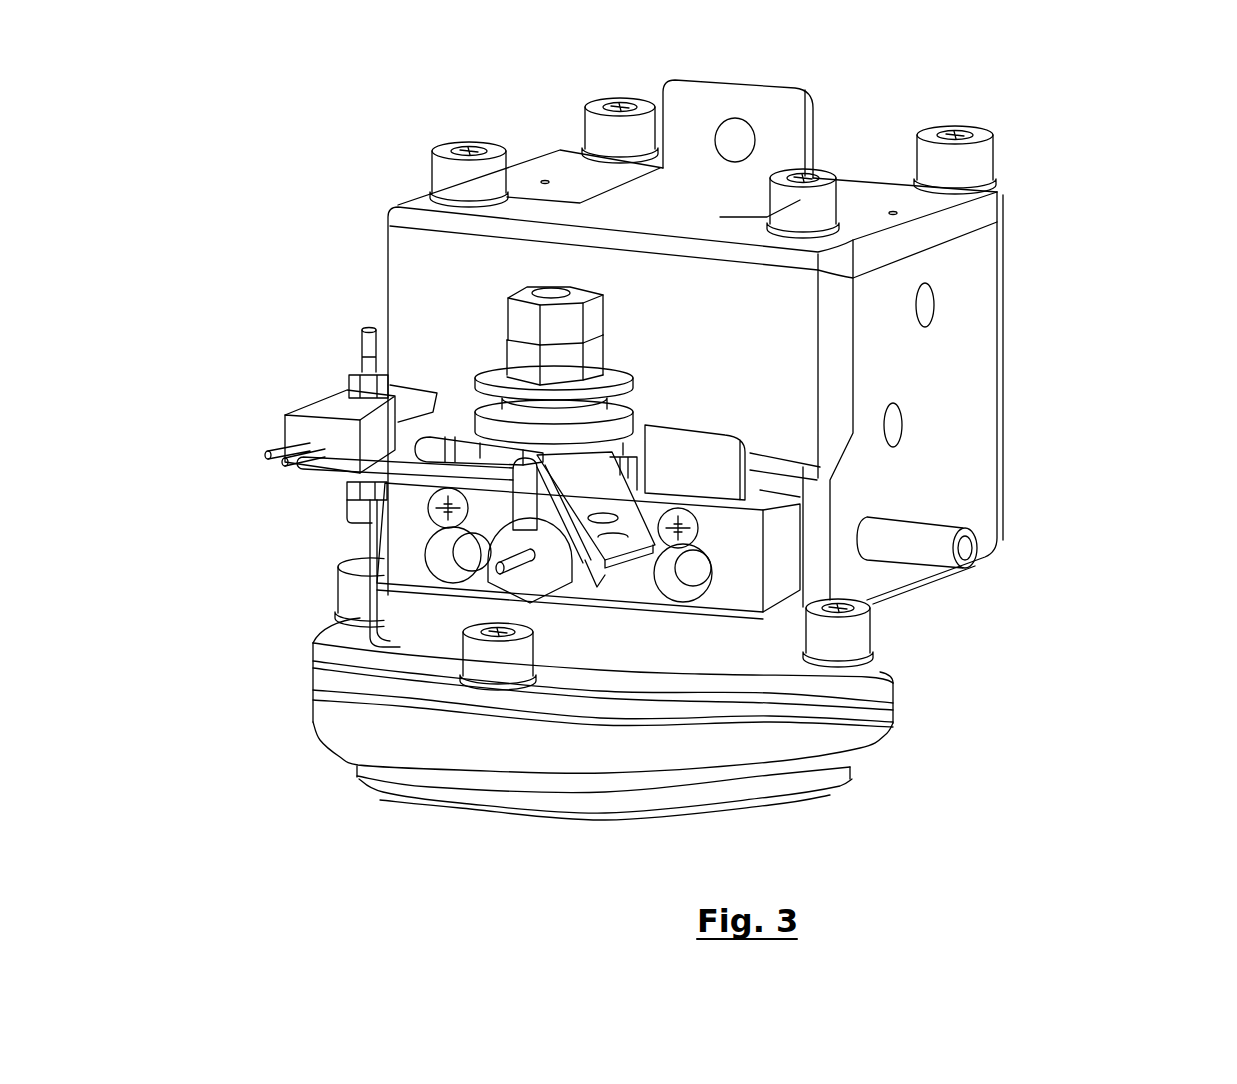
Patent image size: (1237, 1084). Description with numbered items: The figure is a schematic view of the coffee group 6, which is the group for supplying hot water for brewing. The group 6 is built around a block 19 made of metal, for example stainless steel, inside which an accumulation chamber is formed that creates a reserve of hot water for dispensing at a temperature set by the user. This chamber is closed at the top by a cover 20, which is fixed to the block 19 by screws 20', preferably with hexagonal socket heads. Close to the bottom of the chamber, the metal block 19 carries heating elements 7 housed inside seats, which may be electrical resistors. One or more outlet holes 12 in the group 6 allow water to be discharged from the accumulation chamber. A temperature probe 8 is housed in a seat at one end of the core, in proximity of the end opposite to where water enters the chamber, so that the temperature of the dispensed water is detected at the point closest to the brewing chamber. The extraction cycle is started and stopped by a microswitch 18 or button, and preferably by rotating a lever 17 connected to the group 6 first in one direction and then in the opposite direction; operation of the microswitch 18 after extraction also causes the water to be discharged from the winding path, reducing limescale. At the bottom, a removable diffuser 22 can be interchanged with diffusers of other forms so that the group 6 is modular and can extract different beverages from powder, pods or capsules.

The coffee group 6 is at (1018, 333).
The heating elements 7 is at (437, 548).
The temperature probe 8 is at (500, 570).
The outlet holes 12 is at (927, 290).
The lever 17 is at (632, 510).
The microswitch 18 is at (320, 410).
The metal block 19 is at (993, 485).
The cover 20 is at (617, 383).
The screws 20' is at (709, 133).
The diffuser 22 is at (850, 778).